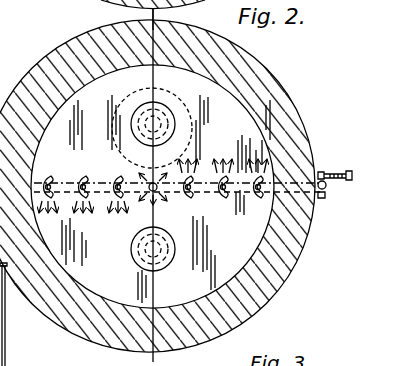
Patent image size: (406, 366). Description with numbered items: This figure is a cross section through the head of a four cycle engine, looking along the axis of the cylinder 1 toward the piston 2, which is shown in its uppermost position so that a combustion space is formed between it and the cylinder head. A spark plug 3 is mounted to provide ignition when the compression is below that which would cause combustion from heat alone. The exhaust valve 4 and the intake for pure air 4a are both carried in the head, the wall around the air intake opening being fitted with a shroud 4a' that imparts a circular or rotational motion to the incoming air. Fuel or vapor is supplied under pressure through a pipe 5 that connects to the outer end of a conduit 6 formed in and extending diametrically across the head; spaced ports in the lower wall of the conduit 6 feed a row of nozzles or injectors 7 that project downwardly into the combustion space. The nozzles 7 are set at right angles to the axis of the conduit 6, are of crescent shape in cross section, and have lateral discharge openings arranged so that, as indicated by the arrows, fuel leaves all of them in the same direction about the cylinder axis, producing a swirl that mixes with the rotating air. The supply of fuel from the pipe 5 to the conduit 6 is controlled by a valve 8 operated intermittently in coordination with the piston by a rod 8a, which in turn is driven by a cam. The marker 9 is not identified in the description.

The cylinder 1 is at (283, 271).
The piston 2 is at (18, 318).
The spark plug 3 is at (138, 355).
The axis marker 9 is at (146, 15).
The exhaust valve 4 is at (163, 268).
The intake for pure air 4a is at (131, 89).
The shroud 4a' is at (152, 122).
The pipe 5 is at (223, 140).
The conduit 6 is at (110, 198).
The nozzle or injector 7 is at (116, 177).
The valve 8 is at (326, 195).
The rod 8a is at (345, 170).